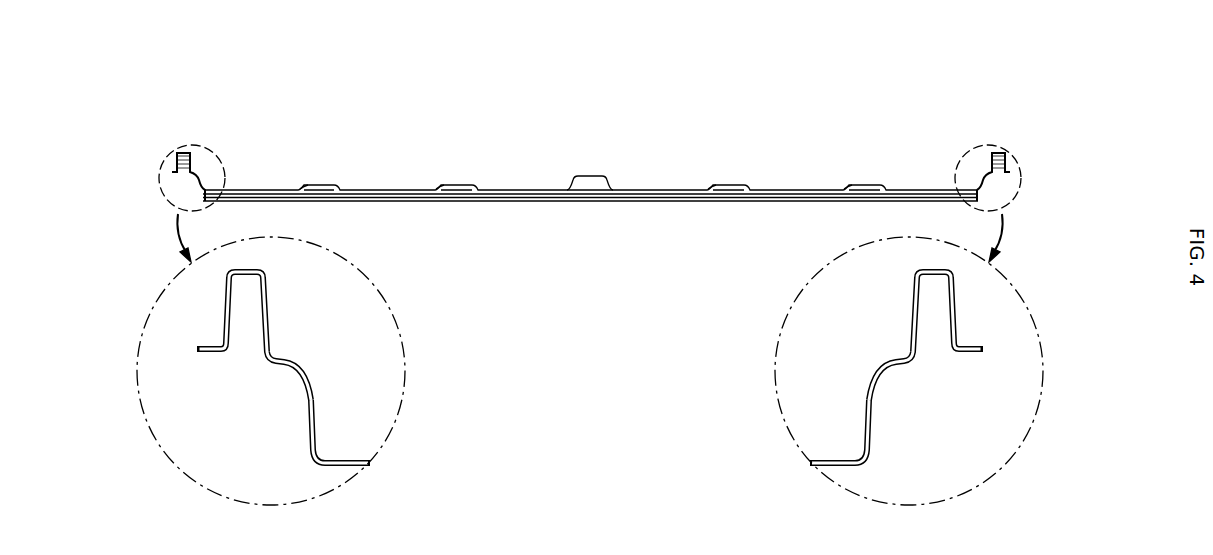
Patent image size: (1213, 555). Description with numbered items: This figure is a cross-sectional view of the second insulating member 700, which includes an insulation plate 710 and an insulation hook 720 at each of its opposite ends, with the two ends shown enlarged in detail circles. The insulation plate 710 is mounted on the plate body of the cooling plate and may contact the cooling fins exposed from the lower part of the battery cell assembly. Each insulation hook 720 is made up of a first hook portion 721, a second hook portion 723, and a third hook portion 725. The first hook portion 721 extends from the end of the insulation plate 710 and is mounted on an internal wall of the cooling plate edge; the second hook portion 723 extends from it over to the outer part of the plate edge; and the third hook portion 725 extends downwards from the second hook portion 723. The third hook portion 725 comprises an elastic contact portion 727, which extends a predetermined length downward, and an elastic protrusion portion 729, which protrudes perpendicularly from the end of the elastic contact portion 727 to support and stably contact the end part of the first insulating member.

The second insulating member 700 is at (821, 76).
The insulation plate 710 is at (507, 189).
The insulation hook 720 is at (185, 151).
The first hook portion 721 is at (268, 325).
The second hook portion 723 is at (239, 268).
The third hook portion 725 is at (92, 289).
The elastic contact portion 727 is at (226, 305).
The elastic protrusion portion 729 is at (197, 344).